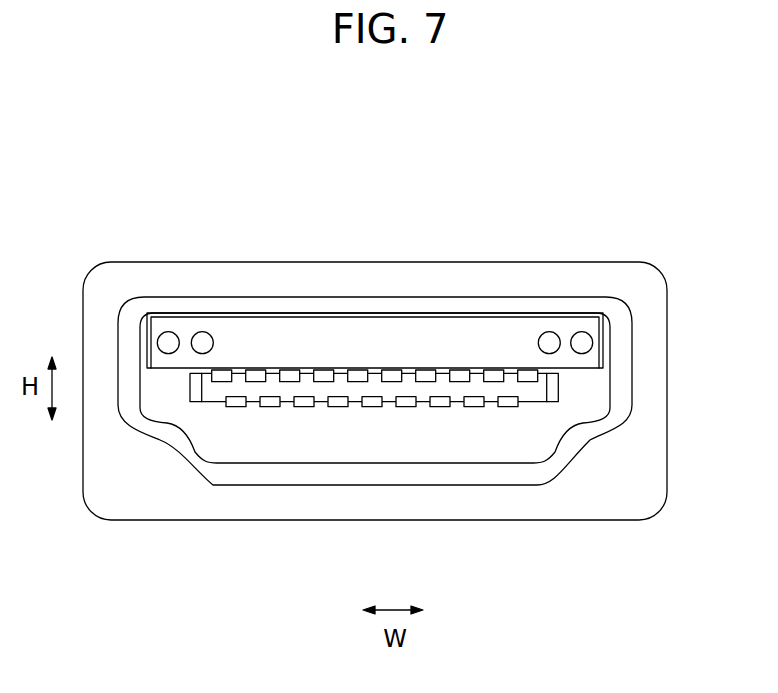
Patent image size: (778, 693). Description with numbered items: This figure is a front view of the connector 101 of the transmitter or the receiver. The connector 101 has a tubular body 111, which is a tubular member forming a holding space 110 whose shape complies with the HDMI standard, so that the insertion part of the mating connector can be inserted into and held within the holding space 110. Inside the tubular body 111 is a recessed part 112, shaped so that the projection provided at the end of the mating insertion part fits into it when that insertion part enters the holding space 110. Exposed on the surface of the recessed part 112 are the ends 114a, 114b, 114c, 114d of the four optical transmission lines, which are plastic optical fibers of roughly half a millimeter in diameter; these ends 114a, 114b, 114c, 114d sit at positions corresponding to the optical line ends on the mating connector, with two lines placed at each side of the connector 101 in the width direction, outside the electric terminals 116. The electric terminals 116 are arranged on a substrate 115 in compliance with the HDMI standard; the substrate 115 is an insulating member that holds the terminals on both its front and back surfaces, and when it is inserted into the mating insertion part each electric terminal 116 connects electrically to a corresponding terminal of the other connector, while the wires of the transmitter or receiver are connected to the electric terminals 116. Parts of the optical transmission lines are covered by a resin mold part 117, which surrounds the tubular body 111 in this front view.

The connector 101 is at (347, 262).
The holding space 110 is at (376, 438).
The tubular body 111 is at (432, 296).
The recessed part 112 is at (269, 333).
The end 114a is at (168, 331).
The end 114b is at (203, 331).
The end 114c is at (549, 331).
The end 114d is at (582, 331).
The substrate 115 is at (210, 397).
The electric terminals 116 is at (237, 406).
The resin mold part 117 is at (647, 498).